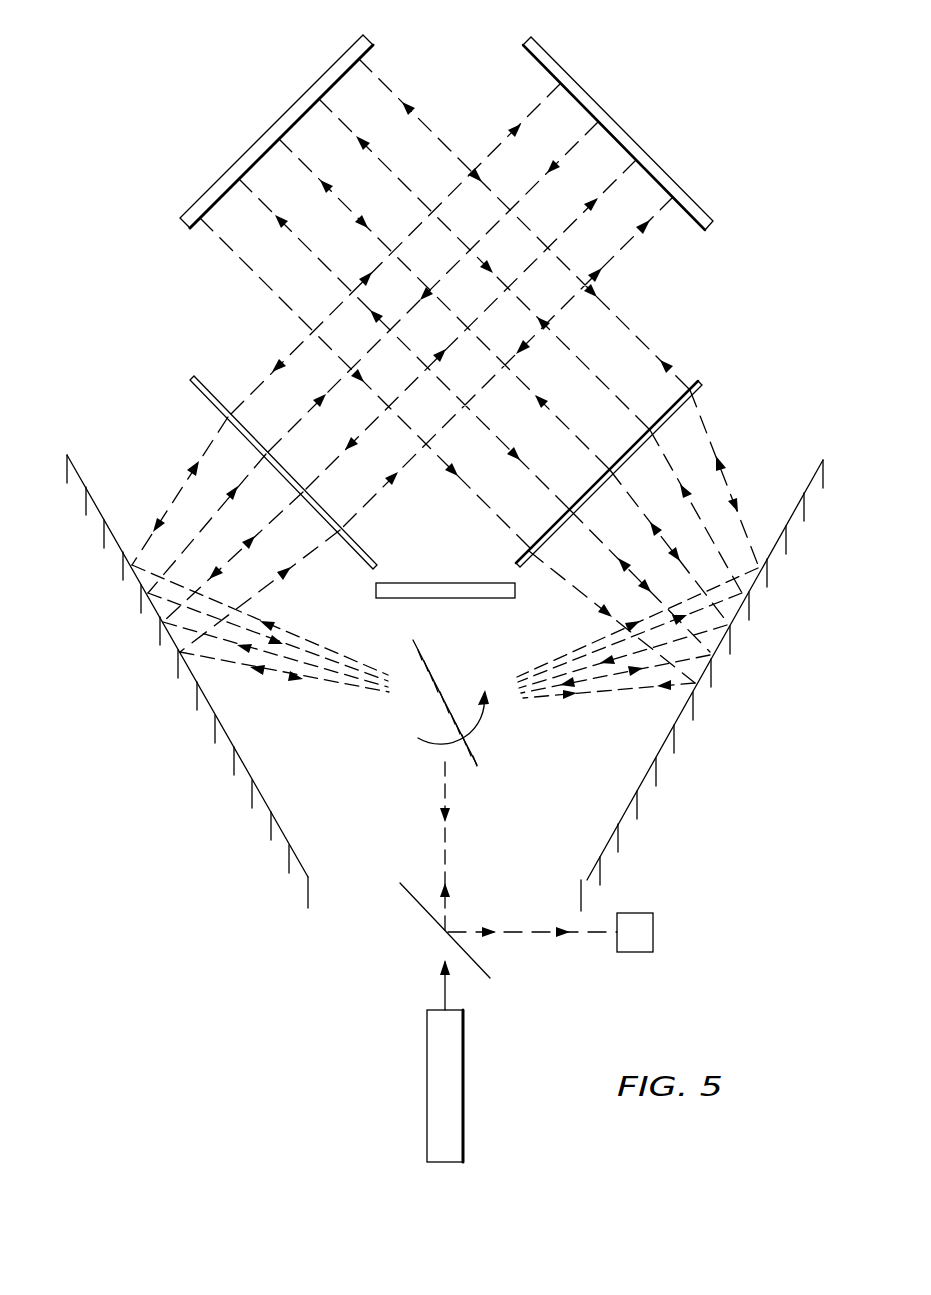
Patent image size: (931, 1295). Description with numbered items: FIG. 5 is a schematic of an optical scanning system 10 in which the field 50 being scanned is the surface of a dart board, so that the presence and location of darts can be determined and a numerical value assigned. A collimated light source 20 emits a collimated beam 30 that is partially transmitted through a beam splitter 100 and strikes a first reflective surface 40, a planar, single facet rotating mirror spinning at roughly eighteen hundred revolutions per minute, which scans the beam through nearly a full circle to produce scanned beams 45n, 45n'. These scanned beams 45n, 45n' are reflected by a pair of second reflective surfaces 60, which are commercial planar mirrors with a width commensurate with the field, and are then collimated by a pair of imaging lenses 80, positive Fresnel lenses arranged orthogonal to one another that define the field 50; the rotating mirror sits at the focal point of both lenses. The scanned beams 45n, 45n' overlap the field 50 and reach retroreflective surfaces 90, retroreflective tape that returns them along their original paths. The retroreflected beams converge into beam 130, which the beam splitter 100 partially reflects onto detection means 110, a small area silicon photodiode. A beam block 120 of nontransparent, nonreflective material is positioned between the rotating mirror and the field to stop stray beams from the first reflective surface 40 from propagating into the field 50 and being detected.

The optical scanning system 10 is at (192, 760).
The collimated light source 20 is at (465, 1065).
The collimated beam 30 is at (445, 1003).
The first reflective surface 40 is at (422, 668).
The scanned beams 45n is at (229, 534).
The scanned beams 45n' is at (669, 536).
The field 50 is at (478, 109).
The second reflective surfaces 60 is at (105, 538).
The imaging lenses 80 is at (209, 394).
The retroreflective surfaces 90 is at (313, 84).
The beam splitter 100 is at (405, 892).
The detection means 110 is at (655, 930).
The beam block 120 is at (399, 583).
The beam 130 is at (447, 795).